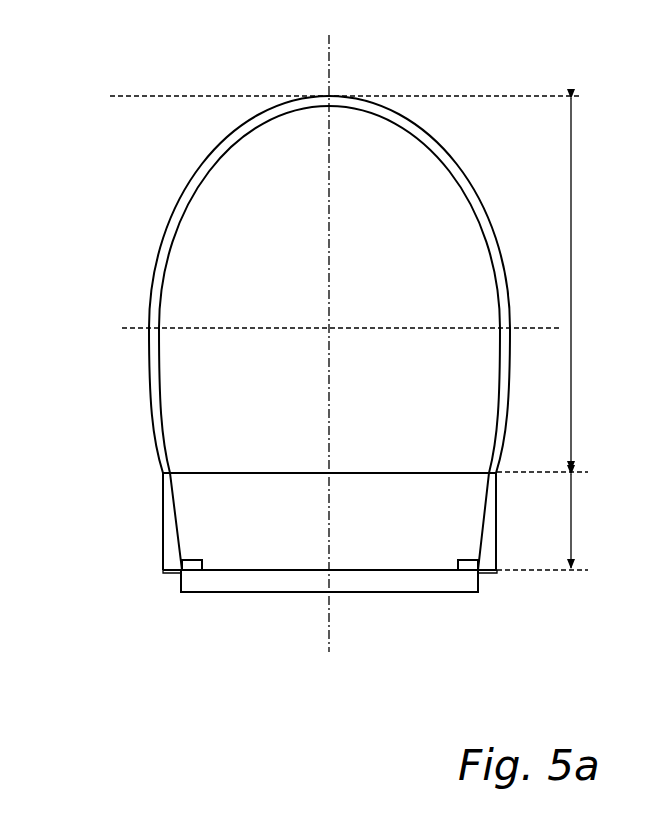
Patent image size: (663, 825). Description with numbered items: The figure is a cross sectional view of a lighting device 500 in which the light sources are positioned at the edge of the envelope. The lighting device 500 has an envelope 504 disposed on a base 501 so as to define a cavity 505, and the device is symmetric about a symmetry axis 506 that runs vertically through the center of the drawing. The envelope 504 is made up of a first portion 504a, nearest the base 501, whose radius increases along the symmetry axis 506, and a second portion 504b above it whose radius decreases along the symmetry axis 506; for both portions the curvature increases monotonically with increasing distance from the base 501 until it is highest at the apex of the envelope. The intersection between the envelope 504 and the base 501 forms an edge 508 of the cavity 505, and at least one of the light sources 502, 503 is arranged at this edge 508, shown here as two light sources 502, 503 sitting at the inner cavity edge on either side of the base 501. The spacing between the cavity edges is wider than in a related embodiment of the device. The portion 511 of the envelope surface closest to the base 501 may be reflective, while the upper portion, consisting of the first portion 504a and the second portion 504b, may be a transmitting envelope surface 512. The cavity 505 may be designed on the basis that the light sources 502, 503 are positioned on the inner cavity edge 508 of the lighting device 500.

The lighting device 500 is at (203, 90).
The base 501 is at (375, 583).
The light source 502 is at (190, 565).
The light source 503 is at (468, 565).
The envelope 504 is at (448, 152).
The first portion 504a is at (108, 330).
The second portion 504b is at (108, 96).
The cavity 505 is at (440, 243).
The symmetry axis 506 is at (329, 62).
The edge 508 is at (165, 569).
The portion of the envelope surface 511 is at (595, 521).
The transmitting envelope surface 512 is at (595, 284).